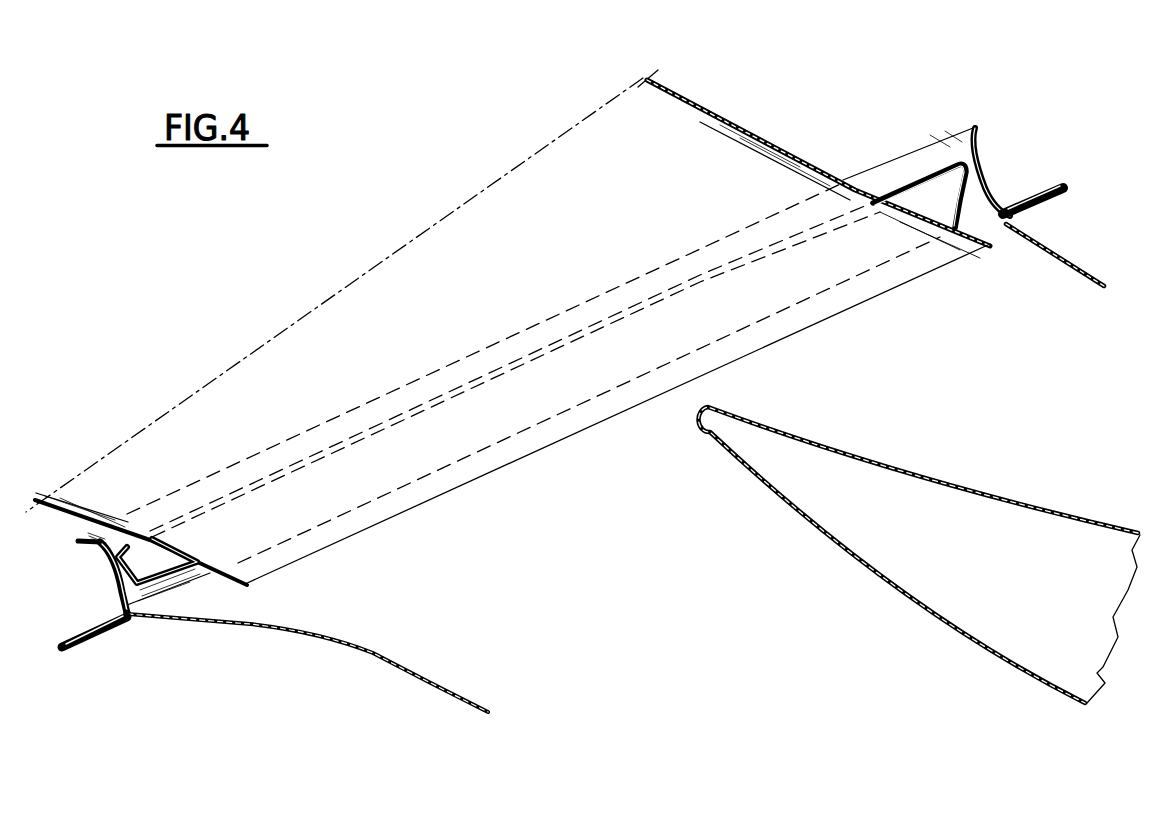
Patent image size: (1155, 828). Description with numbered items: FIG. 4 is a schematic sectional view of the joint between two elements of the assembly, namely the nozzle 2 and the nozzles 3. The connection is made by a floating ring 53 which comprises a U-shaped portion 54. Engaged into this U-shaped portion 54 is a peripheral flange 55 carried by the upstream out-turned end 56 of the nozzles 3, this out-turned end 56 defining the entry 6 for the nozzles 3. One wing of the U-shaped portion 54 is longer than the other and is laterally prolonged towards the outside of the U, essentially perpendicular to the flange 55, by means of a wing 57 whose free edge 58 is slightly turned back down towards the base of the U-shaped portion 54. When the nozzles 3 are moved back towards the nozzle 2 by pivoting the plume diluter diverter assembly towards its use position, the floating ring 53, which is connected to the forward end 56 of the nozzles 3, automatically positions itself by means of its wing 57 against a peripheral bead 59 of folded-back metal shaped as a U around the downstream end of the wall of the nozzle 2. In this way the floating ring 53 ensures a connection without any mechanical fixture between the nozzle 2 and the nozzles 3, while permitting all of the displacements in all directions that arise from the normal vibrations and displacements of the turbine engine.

The nozzle 2 is at (138, 536).
The nozzles 3 is at (723, 455).
The entry 6 is at (546, 517).
The floating ring 53 is at (1043, 188).
The U-shaped portion 54 is at (73, 652).
The peripheral flange 55 is at (131, 620).
The upstream out-turned end 56 is at (274, 634).
The wing 57 is at (108, 573).
The free edge 58 is at (80, 544).
The peripheral bead 59 is at (196, 546).